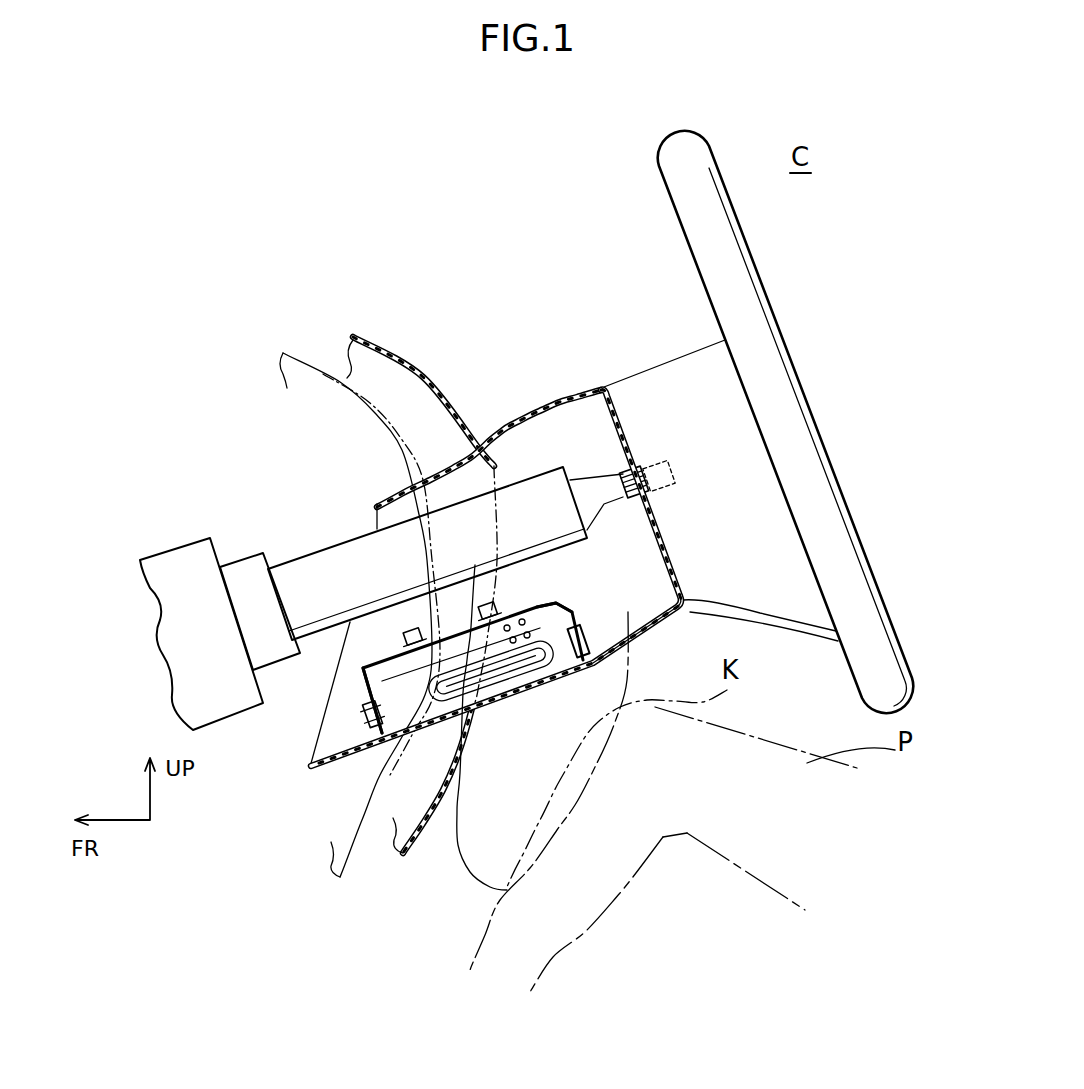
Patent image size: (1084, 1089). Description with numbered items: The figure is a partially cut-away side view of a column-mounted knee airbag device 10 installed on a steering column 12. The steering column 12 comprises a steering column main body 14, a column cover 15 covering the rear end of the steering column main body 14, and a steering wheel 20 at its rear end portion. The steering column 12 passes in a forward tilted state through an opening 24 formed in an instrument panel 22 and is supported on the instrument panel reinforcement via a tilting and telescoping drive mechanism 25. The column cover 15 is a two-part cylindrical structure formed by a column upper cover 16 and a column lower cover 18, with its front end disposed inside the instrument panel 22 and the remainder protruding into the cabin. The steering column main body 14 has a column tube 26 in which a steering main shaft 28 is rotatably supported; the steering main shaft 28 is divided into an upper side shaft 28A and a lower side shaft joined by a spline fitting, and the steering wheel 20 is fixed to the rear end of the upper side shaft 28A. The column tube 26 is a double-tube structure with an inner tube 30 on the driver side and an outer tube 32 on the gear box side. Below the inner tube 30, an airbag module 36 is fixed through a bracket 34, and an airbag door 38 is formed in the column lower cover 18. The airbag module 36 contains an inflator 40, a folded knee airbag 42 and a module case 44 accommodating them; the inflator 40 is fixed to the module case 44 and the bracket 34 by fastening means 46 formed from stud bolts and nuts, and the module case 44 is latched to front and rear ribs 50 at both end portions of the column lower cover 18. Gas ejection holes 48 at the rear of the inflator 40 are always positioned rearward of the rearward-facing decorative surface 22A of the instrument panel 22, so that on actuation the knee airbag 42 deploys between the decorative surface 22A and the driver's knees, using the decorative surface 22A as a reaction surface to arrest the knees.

The column-mounted knee airbag device 10 is at (500, 776).
The steering column 12 is at (791, 298).
The steering column main body 14 is at (344, 517).
The column cover 15 is at (496, 515).
The column upper cover 16 is at (562, 398).
The column lower cover 18 is at (657, 540).
The steering wheel 20 is at (792, 417).
The instrument panel 22 is at (383, 407).
The decorative surface 22A is at (403, 857).
The opening 24 is at (476, 428).
The tilting and telescoping drive mechanism 25 is at (175, 560).
The column tube 26 is at (205, 470).
The steering main shaft 28 is at (606, 474).
The upper side shaft 28A is at (607, 480).
The inner tube 30 is at (306, 570).
The outer tube 32 is at (238, 572).
The bracket 34 is at (577, 596).
The airbag module 36 is at (626, 610).
The airbag door 38 is at (520, 685).
The inflator 40 is at (387, 672).
The knee airbag 42 is at (498, 640).
The module case 44 is at (372, 678).
The fastening means 46 is at (412, 622).
The gas ejection holes 48 is at (514, 560).
The front and rear ribs 50 is at (364, 740).